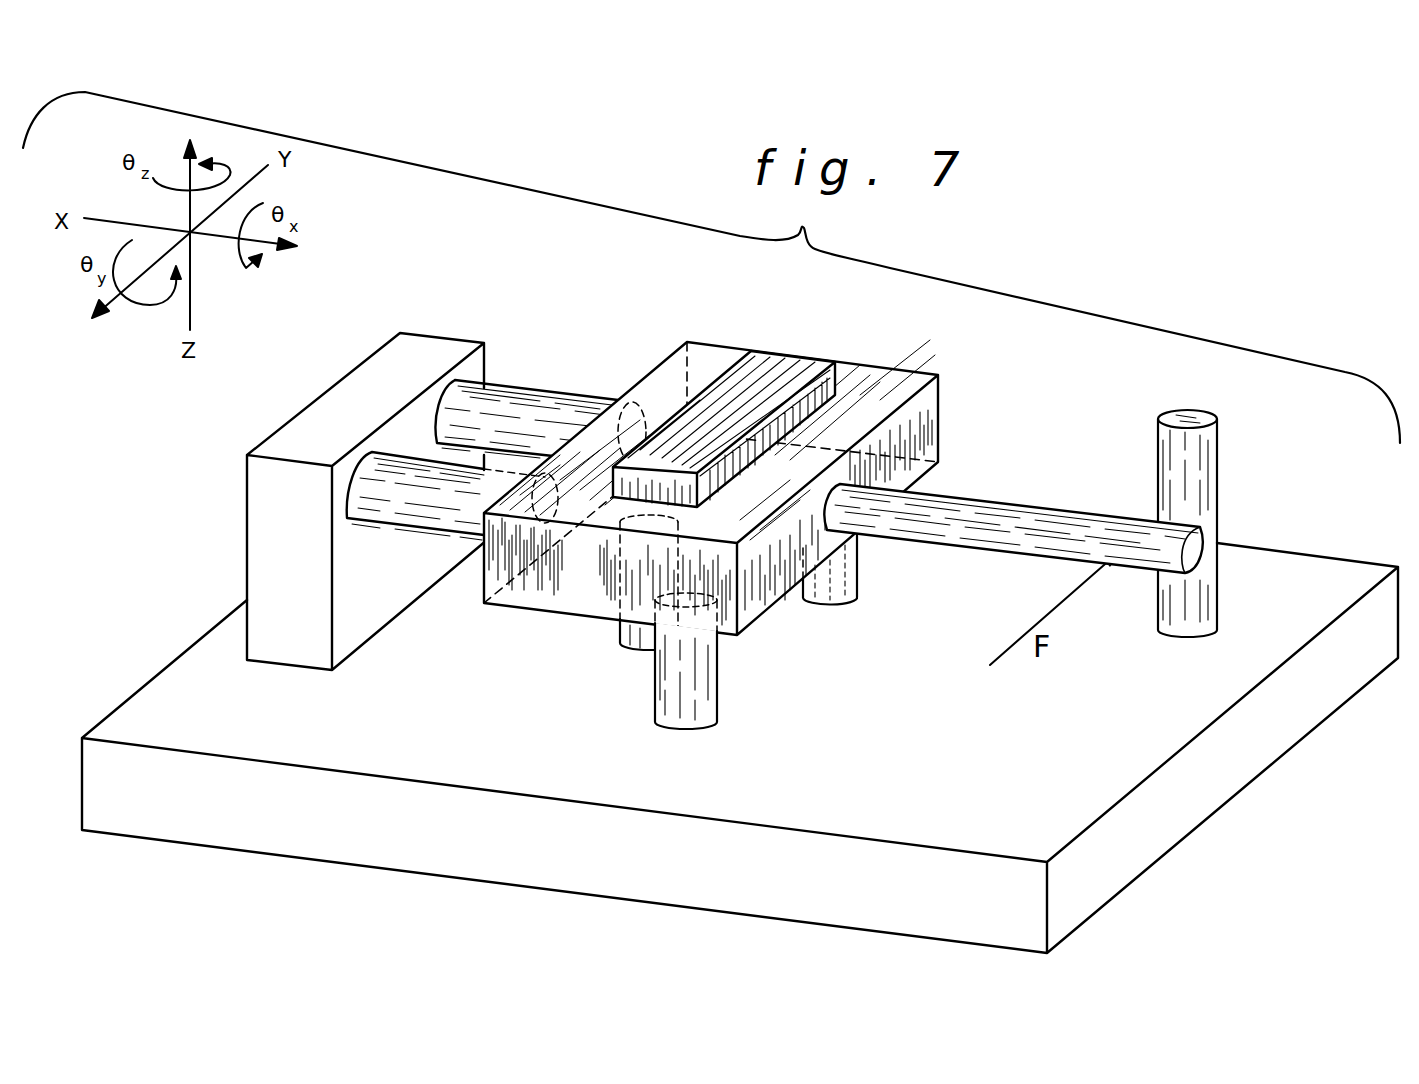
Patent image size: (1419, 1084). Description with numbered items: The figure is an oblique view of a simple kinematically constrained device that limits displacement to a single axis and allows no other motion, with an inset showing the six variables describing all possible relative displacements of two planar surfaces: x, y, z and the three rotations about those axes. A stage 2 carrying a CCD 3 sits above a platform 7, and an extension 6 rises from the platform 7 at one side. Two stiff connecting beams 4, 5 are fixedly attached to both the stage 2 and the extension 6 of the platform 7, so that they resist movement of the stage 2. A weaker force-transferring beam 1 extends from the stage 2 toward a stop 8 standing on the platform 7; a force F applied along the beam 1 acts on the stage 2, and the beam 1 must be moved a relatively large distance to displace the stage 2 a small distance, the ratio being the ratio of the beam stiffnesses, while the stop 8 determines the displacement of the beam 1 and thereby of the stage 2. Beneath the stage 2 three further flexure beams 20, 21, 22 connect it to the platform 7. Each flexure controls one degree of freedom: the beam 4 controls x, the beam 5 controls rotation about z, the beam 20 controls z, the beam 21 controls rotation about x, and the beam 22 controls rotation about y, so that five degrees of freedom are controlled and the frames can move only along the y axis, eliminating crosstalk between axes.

The force-transferring beam 1 is at (948, 546).
The stage 2 is at (956, 424).
The CCD 3 is at (771, 366).
The connecting beam 4 is at (531, 386).
The connecting beam 5 is at (466, 538).
The extension of platform 6 is at (258, 522).
The platform 7 is at (198, 783).
The stop 8 is at (1218, 470).
The beam 20 is at (862, 580).
The beam 21 is at (718, 682).
The beam 22 is at (618, 628).